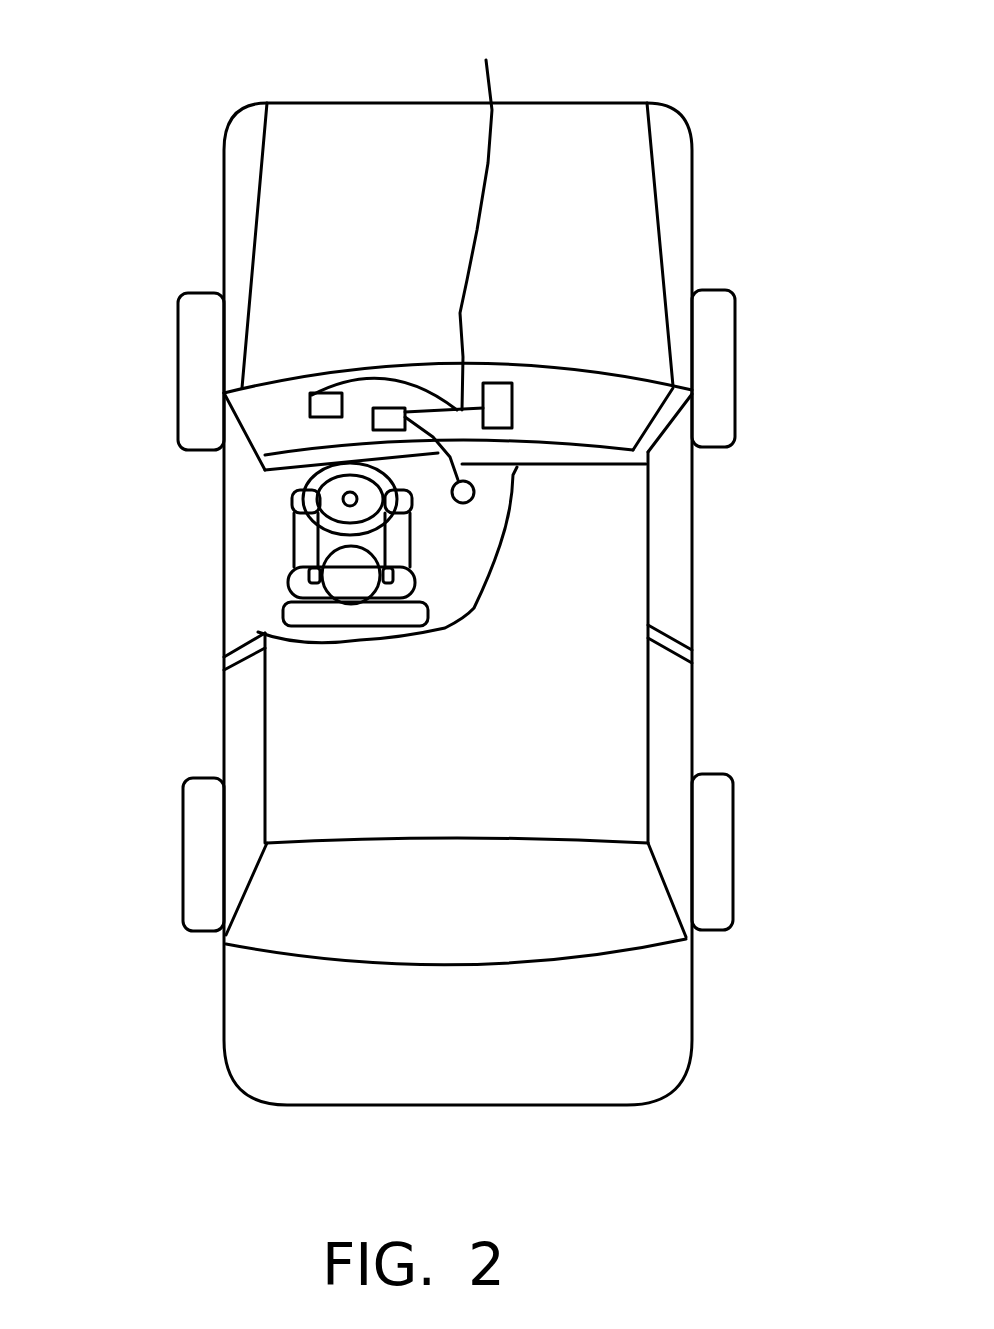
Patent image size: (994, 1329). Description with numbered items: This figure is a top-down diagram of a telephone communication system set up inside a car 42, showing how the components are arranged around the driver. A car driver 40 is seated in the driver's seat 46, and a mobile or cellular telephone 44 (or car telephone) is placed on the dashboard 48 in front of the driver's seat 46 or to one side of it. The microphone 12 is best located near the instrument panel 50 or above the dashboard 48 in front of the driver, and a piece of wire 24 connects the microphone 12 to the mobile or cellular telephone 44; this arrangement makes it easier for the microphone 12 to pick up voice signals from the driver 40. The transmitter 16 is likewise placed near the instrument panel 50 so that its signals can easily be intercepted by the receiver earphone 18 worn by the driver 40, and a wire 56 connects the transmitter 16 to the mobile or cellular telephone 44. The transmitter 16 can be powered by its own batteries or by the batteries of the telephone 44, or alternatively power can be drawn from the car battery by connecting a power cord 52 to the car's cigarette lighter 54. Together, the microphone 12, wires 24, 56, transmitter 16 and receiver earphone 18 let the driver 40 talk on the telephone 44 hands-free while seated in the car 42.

The microphone 12 is at (310, 395).
The transmitter 16 is at (373, 425).
The receiver earphone 18 is at (290, 567).
The wire 24 is at (387, 376).
The car driver 40 is at (348, 585).
The car 42 is at (685, 128).
The mobile or cellular telephone 44 is at (507, 387).
The driver's seat 46 is at (315, 613).
The dashboard 48 is at (630, 410).
The instrument panel 50 is at (283, 458).
The power cord 52 is at (517, 467).
The cigarette lighter 54 is at (475, 497).
The wire 56 is at (483, 213).